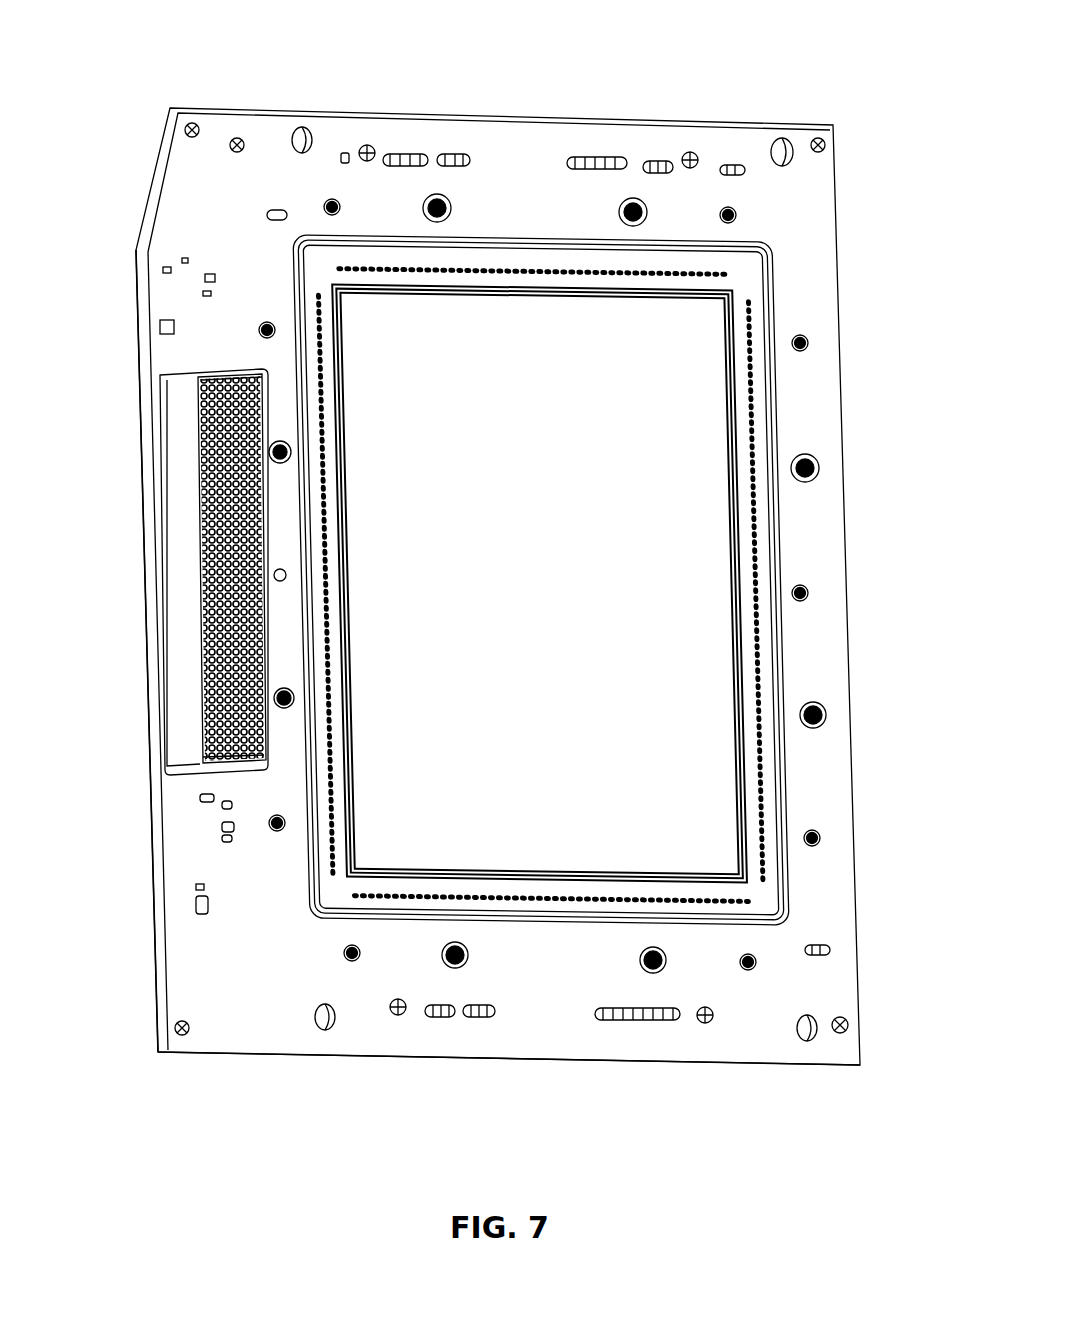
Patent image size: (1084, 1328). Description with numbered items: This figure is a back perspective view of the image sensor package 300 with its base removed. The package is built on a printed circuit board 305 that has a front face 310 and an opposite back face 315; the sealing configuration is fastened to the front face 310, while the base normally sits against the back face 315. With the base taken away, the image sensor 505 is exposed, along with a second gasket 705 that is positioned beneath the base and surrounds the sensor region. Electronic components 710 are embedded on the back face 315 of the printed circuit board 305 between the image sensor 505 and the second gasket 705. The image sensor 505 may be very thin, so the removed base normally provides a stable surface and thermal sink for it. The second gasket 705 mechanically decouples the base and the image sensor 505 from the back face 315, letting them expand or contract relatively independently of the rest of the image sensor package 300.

The image sensor package 300 is at (822, 78).
The printed circuit board 305 is at (226, 202).
The front face 310 is at (62, 923).
The back face 315 is at (270, 1013).
The image sensor 505 is at (387, 743).
The second gasket 705 is at (787, 892).
The electronic components 710 is at (757, 612).